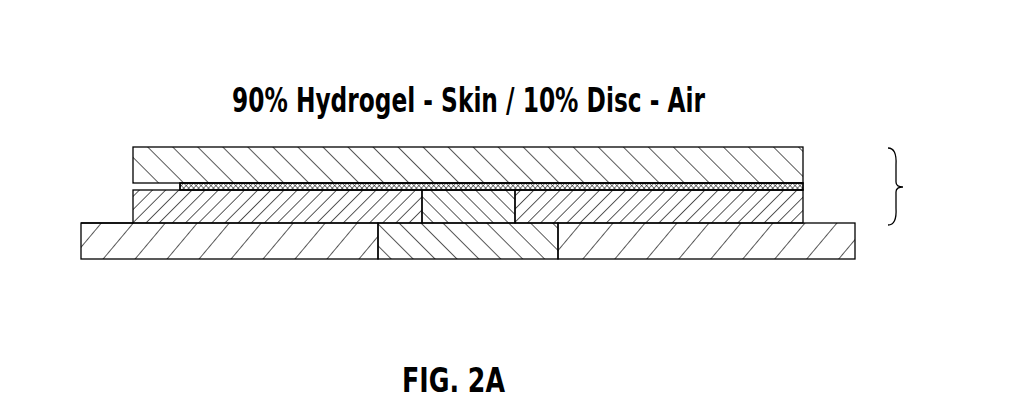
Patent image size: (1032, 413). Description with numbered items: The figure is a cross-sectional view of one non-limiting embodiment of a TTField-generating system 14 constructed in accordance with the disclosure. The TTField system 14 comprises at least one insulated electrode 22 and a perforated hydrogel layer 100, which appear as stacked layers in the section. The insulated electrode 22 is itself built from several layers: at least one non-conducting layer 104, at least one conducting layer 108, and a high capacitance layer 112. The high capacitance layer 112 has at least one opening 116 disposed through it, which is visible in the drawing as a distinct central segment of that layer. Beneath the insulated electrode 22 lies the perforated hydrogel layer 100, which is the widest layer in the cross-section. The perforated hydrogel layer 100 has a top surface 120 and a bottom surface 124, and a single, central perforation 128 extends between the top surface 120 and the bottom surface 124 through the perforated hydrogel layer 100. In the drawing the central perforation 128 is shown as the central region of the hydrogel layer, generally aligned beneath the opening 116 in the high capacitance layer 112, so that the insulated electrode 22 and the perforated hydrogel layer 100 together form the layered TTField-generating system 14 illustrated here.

The TTField-generating system 14 is at (822, 42).
The insulated electrode 22 is at (911, 186).
The perforated hydrogel layer 100 is at (258, 240).
The non-conducting layer 104 is at (760, 157).
The conducting layer 108 is at (772, 184).
The high capacitance layer 112 is at (508, 249).
The opening 116 is at (470, 208).
The top surface 120 is at (113, 222).
The bottom surface 124 is at (462, 277).
The central perforation 128 is at (430, 238).